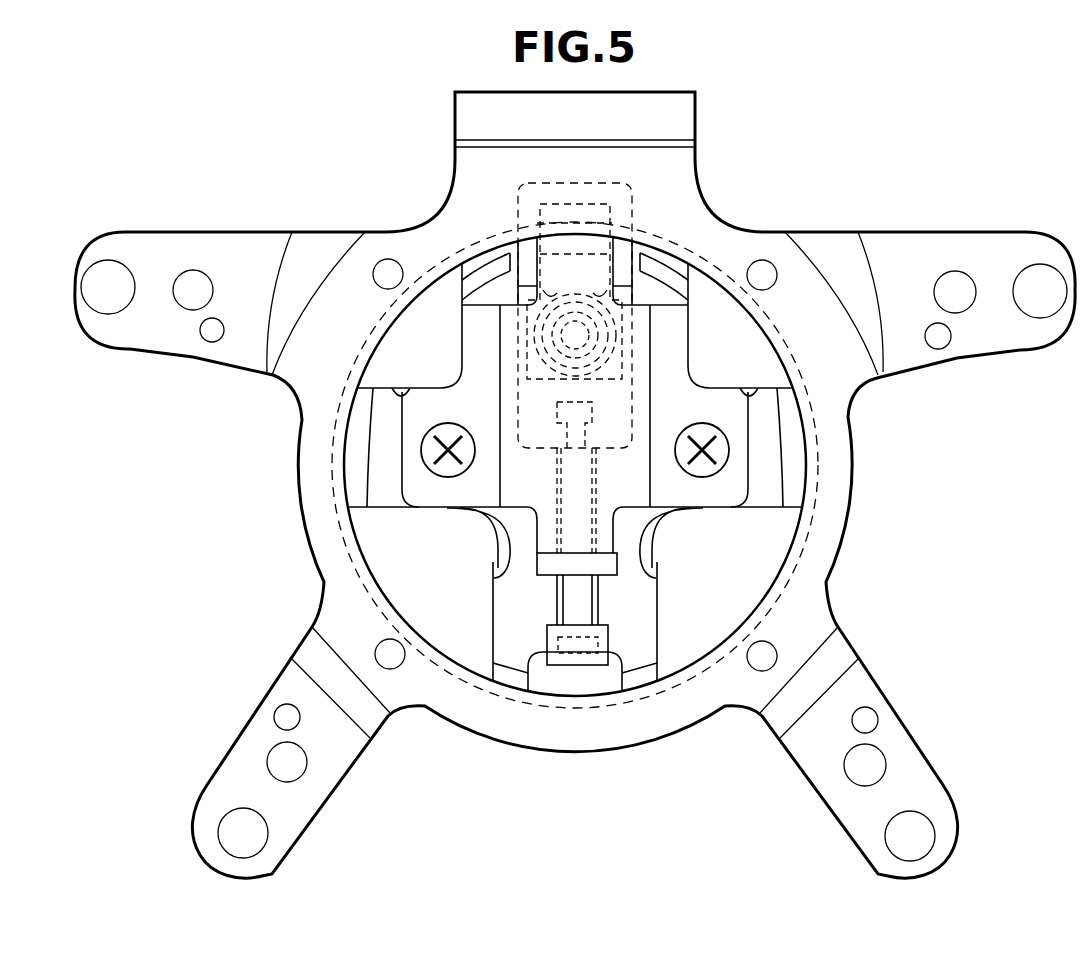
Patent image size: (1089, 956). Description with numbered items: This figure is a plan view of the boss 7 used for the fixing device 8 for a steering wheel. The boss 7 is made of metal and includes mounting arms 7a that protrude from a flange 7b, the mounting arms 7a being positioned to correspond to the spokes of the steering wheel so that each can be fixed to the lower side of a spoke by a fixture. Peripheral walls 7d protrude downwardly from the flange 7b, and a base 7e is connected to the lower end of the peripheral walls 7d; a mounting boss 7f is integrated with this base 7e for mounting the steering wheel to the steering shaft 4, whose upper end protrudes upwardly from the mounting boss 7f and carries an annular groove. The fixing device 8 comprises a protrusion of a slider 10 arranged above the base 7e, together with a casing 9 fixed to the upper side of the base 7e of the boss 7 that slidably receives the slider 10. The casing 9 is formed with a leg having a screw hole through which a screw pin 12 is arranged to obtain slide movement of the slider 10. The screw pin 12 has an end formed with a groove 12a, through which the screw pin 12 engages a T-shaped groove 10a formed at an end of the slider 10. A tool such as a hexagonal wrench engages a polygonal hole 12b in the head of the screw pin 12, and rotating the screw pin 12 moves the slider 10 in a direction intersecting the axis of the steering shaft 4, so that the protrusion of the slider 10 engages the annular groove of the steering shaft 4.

The steering shaft 4 is at (567, 333).
The boss 7 is at (863, 487).
The mounting arm 7a is at (225, 245).
The flange 7b is at (825, 572).
The peripheral wall 7d is at (790, 425).
The base 7e is at (508, 605).
The mounting boss 7f is at (600, 330).
The fixing device 8 is at (222, 420).
The casing 9 is at (510, 393).
The slider 10 is at (530, 414).
The T-shaped groove 10a is at (592, 412).
The screw pin 12 is at (583, 605).
The groove 12a is at (563, 437).
The polygonal hole 12b is at (580, 662).